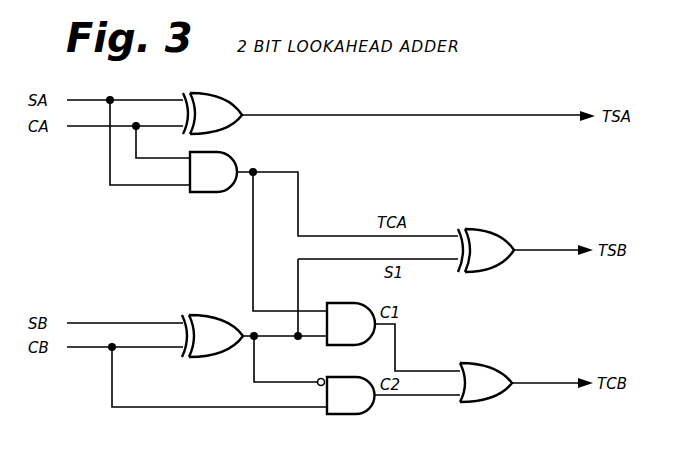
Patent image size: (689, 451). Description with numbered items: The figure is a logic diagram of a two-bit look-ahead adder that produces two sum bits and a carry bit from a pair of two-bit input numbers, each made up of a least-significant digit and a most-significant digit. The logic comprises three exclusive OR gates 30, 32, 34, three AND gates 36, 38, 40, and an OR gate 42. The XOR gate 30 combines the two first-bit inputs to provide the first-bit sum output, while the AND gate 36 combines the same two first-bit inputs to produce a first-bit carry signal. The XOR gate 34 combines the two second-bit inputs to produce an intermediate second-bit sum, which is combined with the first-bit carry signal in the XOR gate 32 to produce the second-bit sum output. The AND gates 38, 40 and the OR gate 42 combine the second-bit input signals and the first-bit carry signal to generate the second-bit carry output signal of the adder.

The exclusive OR gate 30 is at (232, 93).
The exclusive OR gate 32 is at (497, 230).
The exclusive OR gate 34 is at (232, 356).
The AND gate 36 is at (236, 155).
The AND gate 38 is at (361, 303).
The AND gate 40 is at (371, 413).
The OR gate 42 is at (502, 397).